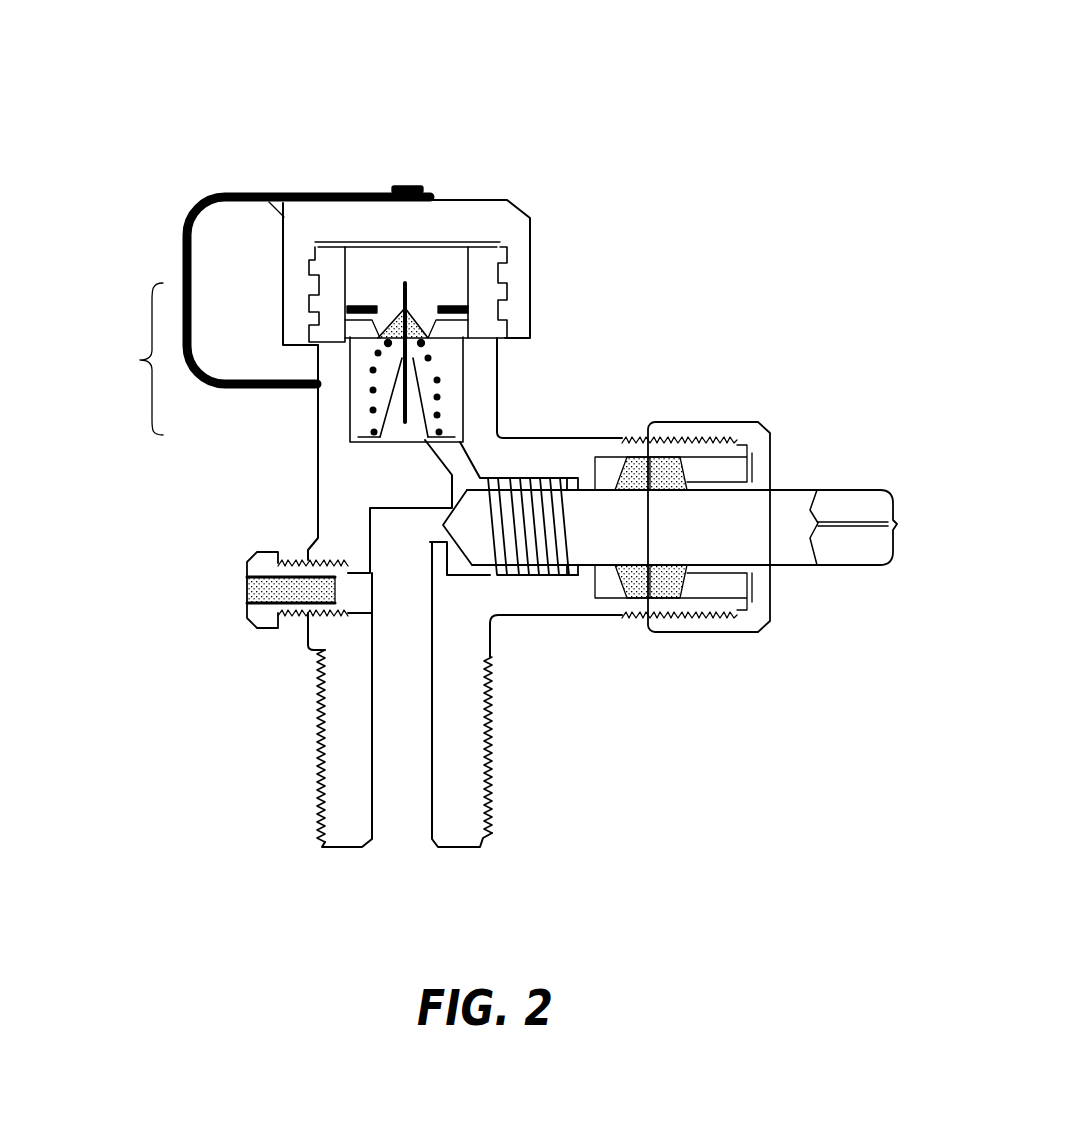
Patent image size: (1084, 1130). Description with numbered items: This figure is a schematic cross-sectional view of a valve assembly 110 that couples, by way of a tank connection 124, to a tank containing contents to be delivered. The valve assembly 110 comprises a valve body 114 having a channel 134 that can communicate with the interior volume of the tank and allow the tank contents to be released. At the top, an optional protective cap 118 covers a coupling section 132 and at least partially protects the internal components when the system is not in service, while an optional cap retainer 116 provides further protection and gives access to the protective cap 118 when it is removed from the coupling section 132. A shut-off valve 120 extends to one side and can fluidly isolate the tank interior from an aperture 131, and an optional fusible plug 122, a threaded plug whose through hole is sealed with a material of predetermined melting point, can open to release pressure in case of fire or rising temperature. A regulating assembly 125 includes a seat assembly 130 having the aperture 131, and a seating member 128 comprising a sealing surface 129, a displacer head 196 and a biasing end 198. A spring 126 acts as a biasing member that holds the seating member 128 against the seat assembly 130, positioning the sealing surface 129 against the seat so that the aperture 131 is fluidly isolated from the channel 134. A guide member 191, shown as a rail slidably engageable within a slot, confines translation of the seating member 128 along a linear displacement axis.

The valve assembly 110 is at (684, 118).
The valve body 114 is at (500, 625).
The cap retainer 116 is at (183, 237).
The protective cap 118 is at (532, 268).
The shut-off valve 120 is at (835, 480).
The fusible plug 122 is at (240, 598).
The tank connection 124 is at (310, 776).
The regulating assembly 125 is at (122, 359).
The spring 126 is at (442, 378).
The seating member 128 is at (334, 255).
The sealing surface 129 is at (413, 327).
The seat assembly 130 is at (493, 244).
The aperture 131 is at (415, 305).
The coupling section 132 is at (385, 332).
The channel 134 is at (413, 793).
The guide member 191 is at (400, 445).
The displacer head 196 is at (405, 283).
The biasing end 198 is at (402, 347).